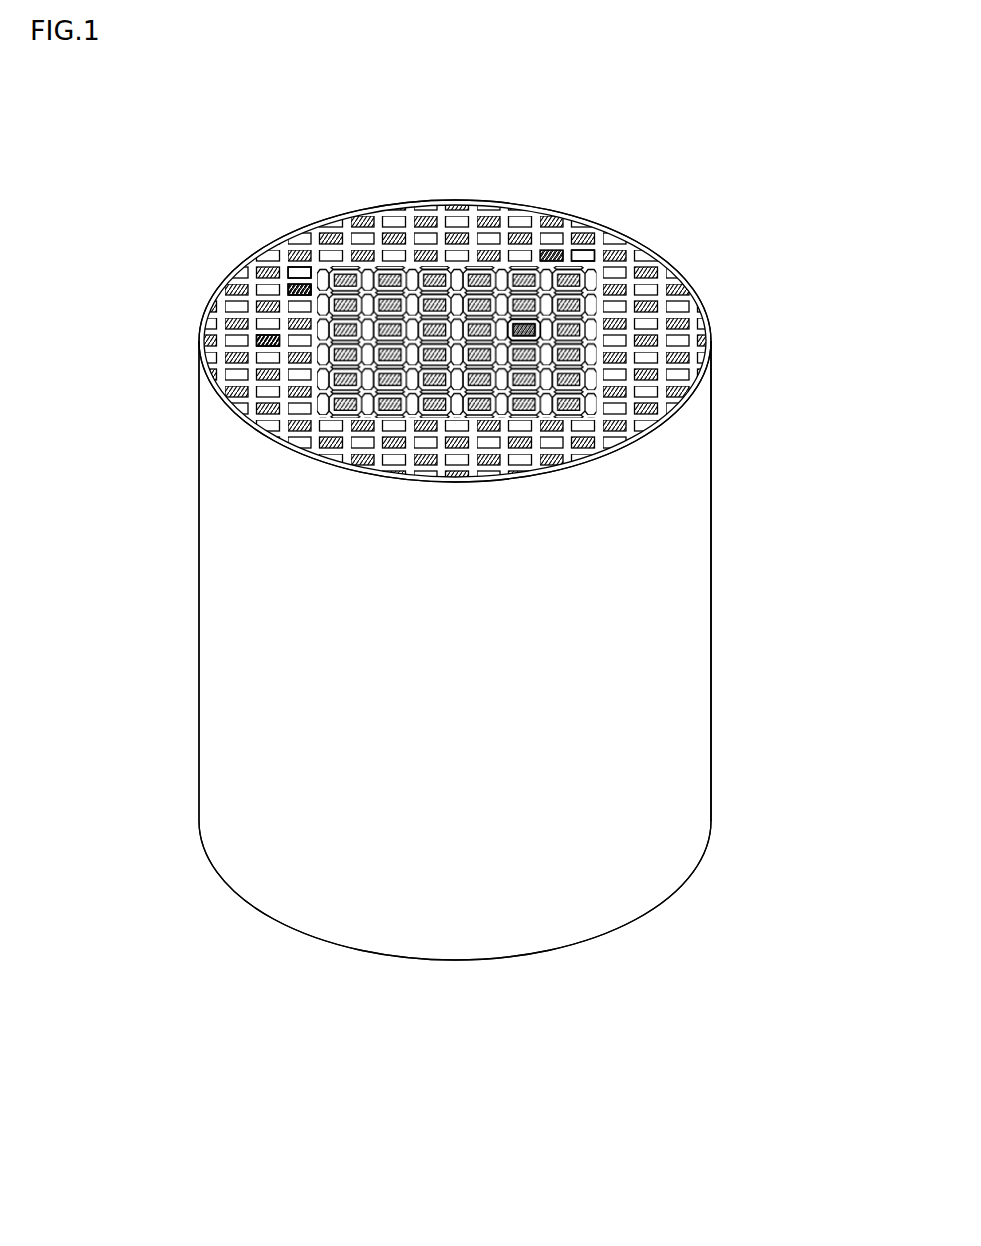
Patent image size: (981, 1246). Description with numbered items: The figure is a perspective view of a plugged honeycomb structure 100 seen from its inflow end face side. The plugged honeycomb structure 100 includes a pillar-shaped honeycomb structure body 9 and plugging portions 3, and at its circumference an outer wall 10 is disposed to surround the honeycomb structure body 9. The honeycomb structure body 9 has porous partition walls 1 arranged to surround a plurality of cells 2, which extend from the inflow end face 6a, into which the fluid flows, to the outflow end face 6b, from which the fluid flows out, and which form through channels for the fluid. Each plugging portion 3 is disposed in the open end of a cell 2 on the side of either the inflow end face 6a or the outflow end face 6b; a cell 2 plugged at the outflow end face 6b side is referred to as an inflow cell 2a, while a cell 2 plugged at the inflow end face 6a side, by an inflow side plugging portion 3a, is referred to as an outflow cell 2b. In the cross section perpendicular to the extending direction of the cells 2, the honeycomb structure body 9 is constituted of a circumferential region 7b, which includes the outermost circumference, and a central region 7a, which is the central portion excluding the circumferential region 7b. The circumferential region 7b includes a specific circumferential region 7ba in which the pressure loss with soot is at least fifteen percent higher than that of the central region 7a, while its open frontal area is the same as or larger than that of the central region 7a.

The plugged honeycomb structure 100 is at (793, 113).
The partition wall 1 is at (315, 252).
The cell 2 is at (300, 275).
The inflow cell 2a is at (300, 275).
The outflow cell 2b is at (293, 290).
The plugging portion 3 is at (258, 338).
The inflow side plugging portion 3a is at (258, 338).
The inflow end face 6a is at (407, 197).
The outflow end face 6b is at (360, 963).
The central region 7a is at (542, 330).
The circumferential region 7b is at (588, 248).
The specific circumferential region 7ba is at (588, 248).
The honeycomb structure body 9 is at (712, 563).
The outer wall 10 is at (673, 480).